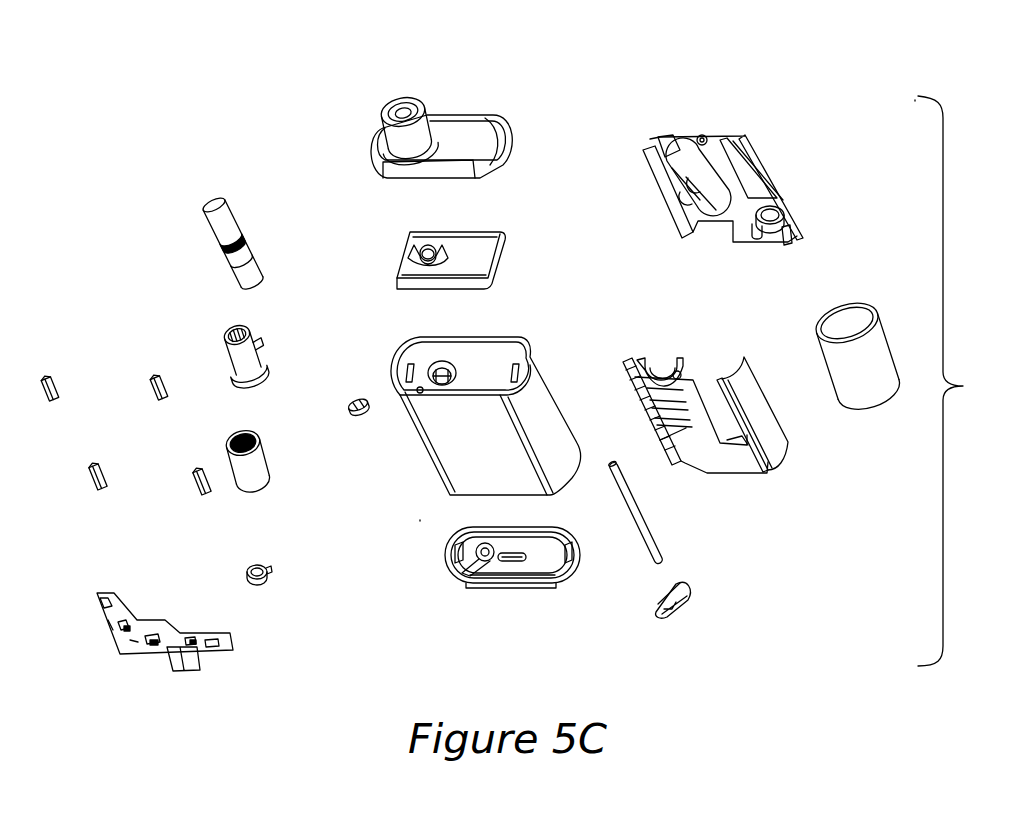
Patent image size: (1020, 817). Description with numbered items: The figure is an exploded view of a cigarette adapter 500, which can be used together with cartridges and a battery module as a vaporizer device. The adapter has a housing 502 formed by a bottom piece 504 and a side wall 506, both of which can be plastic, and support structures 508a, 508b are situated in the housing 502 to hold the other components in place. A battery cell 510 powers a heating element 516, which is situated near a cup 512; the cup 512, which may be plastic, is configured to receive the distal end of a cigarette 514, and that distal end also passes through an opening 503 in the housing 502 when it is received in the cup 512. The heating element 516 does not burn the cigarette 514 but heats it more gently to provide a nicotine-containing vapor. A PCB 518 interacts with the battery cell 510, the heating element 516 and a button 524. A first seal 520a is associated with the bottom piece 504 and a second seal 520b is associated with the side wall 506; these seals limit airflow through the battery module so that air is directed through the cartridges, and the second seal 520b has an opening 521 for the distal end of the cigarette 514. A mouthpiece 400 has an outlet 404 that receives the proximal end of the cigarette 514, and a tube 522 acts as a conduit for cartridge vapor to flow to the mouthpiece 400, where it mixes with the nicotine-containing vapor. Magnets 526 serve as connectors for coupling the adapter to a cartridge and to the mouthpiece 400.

The mouthpiece 400 is at (532, 108).
The outlet 404 is at (400, 96).
The cigarette adapter 500 is at (806, 146).
The housing 502 is at (413, 555).
The opening 503 is at (447, 365).
The bottom piece 504 is at (513, 567).
The side wall 506 is at (452, 463).
The support structure 508a is at (752, 460).
The support structure 508b is at (712, 208).
The battery cell 510 is at (848, 370).
The cup 512 is at (240, 360).
The cigarette 514 is at (223, 222).
The heating element 516 is at (258, 465).
The PCB 518 is at (137, 630).
The first seal 520a is at (677, 588).
The second seal 520b is at (413, 243).
The opening 521 is at (440, 252).
The tube 522 is at (637, 510).
The button 524 is at (367, 393).
The magnets 526 is at (200, 470).